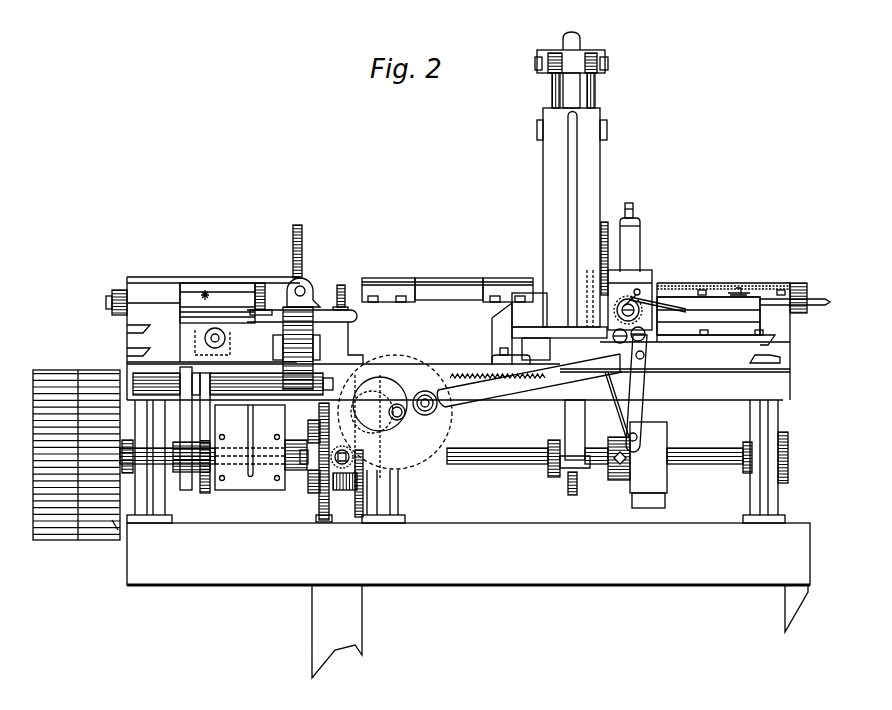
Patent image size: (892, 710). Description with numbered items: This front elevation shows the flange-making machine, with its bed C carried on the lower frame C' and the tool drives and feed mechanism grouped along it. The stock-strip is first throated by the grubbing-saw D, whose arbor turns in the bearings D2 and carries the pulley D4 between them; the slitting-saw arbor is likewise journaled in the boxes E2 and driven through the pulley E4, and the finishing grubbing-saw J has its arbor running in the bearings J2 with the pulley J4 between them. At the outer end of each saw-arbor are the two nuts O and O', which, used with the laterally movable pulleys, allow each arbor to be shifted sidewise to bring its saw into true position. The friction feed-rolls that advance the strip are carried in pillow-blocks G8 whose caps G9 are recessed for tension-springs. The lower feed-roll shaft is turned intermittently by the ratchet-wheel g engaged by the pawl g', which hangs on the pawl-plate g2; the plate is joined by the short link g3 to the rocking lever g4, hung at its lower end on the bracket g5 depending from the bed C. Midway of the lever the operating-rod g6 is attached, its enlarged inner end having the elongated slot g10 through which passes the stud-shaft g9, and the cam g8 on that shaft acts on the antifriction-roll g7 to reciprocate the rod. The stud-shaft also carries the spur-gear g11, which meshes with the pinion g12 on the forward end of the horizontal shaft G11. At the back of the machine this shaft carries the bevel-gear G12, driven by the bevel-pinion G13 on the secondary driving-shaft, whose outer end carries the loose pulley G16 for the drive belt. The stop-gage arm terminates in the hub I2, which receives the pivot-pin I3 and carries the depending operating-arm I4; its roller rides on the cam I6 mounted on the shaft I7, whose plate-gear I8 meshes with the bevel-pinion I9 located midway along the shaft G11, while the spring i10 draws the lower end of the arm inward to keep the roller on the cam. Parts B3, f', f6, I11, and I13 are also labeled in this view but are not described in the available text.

The bed C is at (458, 338).
The frame C' is at (468, 600).
The nut O is at (459, 292).
The nut O' is at (459, 291).
The finishing grubbing-saw J is at (292, 243).
The bearings J2 is at (158, 277).
The pulley J4 is at (213, 277).
The hub I2 is at (308, 285).
The pivot bolt or pin I3 is at (319, 366).
The operating-arm I4 is at (315, 334).
The cam I6 is at (566, 490).
The shaft I7 is at (199, 485).
The plate-gear I8 is at (396, 496).
The bevel-pinion I9 is at (316, 470).
The pivot pin I11 is at (319, 519).
The bearing block I13 is at (250, 447).
The boxes E2 is at (380, 280).
The pulley E4 is at (445, 280).
The brackets B3 is at (505, 262).
The handle f' is at (584, 40).
The plunger column f6 is at (552, 173).
The grubbing-saw D is at (605, 223).
The bearings D2 is at (756, 296).
The pulley D4 is at (737, 288).
The pillow-blocks G8 is at (655, 278).
The caps G9 is at (632, 237).
The shaft G11 is at (320, 495).
The bevel-gear G12 is at (353, 493).
The bevel-pinion G13 is at (313, 440).
The loose pulley G16 is at (76, 455).
The ratchet-wheel g is at (613, 341).
The pawl g' is at (610, 280).
The pawl-plate g2 is at (660, 292).
The link g3 is at (644, 345).
The rocking lever g4 is at (645, 387).
The bracket g5 is at (618, 386).
The operating-rod g6 is at (534, 390).
The antifriction-roll g7 is at (428, 392).
The cam g8 is at (388, 378).
The stud-shaft g9 is at (398, 403).
The elongated slot g10 is at (386, 384).
The spur-gear g11 is at (452, 410).
The pinion g12 is at (343, 466).
The spring i10 is at (112, 520).